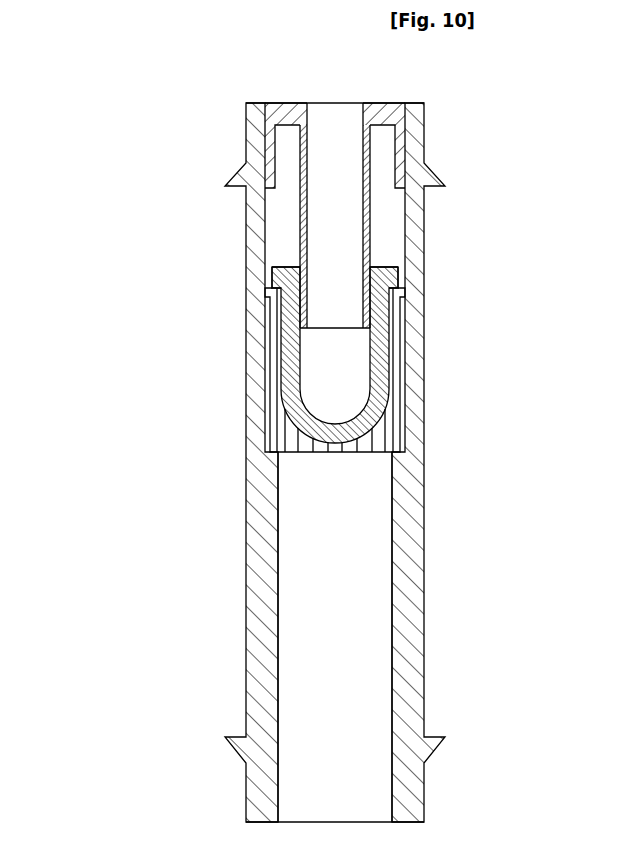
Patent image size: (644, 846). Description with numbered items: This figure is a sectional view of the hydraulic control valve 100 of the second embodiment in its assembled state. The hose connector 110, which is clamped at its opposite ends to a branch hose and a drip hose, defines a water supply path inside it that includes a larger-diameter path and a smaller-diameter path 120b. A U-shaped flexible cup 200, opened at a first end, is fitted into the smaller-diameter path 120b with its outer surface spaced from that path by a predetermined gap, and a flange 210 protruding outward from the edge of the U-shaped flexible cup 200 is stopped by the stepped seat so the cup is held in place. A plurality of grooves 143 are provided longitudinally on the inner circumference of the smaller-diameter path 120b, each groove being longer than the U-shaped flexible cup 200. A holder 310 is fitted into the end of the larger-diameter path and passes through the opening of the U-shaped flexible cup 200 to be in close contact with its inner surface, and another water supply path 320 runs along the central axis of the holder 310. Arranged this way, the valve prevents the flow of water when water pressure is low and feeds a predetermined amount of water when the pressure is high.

The hydraulic control valve 100 is at (168, 358).
The hose connector 110 is at (262, 572).
The smaller-diameter path 120b is at (345, 620).
The grooves 143 is at (393, 440).
The U-shaped flexible cup 200 is at (385, 356).
The flange 210 is at (397, 277).
The holder 310 is at (396, 116).
The water supply path 320 is at (343, 202).